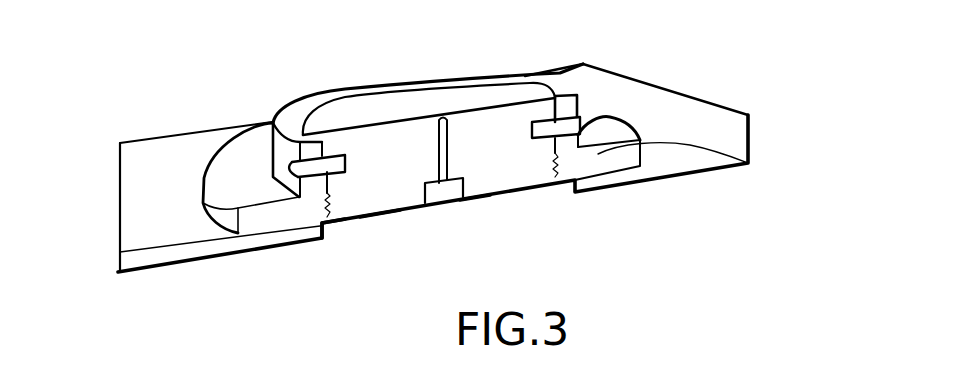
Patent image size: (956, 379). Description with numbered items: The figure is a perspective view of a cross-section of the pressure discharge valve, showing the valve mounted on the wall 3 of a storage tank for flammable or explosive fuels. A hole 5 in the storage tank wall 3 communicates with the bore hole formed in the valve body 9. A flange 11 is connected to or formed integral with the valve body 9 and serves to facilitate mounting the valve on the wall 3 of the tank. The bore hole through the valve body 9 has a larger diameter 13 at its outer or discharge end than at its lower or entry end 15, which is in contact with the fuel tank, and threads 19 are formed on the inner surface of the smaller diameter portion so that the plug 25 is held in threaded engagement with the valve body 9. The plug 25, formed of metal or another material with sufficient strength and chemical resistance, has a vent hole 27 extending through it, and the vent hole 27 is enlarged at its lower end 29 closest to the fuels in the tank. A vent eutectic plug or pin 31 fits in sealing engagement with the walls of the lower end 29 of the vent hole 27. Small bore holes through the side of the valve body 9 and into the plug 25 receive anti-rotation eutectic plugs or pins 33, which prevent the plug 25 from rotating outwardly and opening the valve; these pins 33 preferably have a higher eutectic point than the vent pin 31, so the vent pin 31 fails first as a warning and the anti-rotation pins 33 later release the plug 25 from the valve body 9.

The wall 3 is at (197, 163).
The hole 5 is at (335, 230).
The valve body 9 is at (562, 108).
The flange 11 is at (257, 220).
The larger diameter 13 is at (480, 115).
The entry end 15 is at (380, 212).
The threads 19 is at (748, 164).
The plug 25 is at (358, 120).
The vent hole 27 is at (447, 152).
The lower end 29 is at (475, 195).
The eutectic plug or pin 31 is at (443, 193).
The anti-rotation eutectic plugs or pins 33 is at (318, 168).